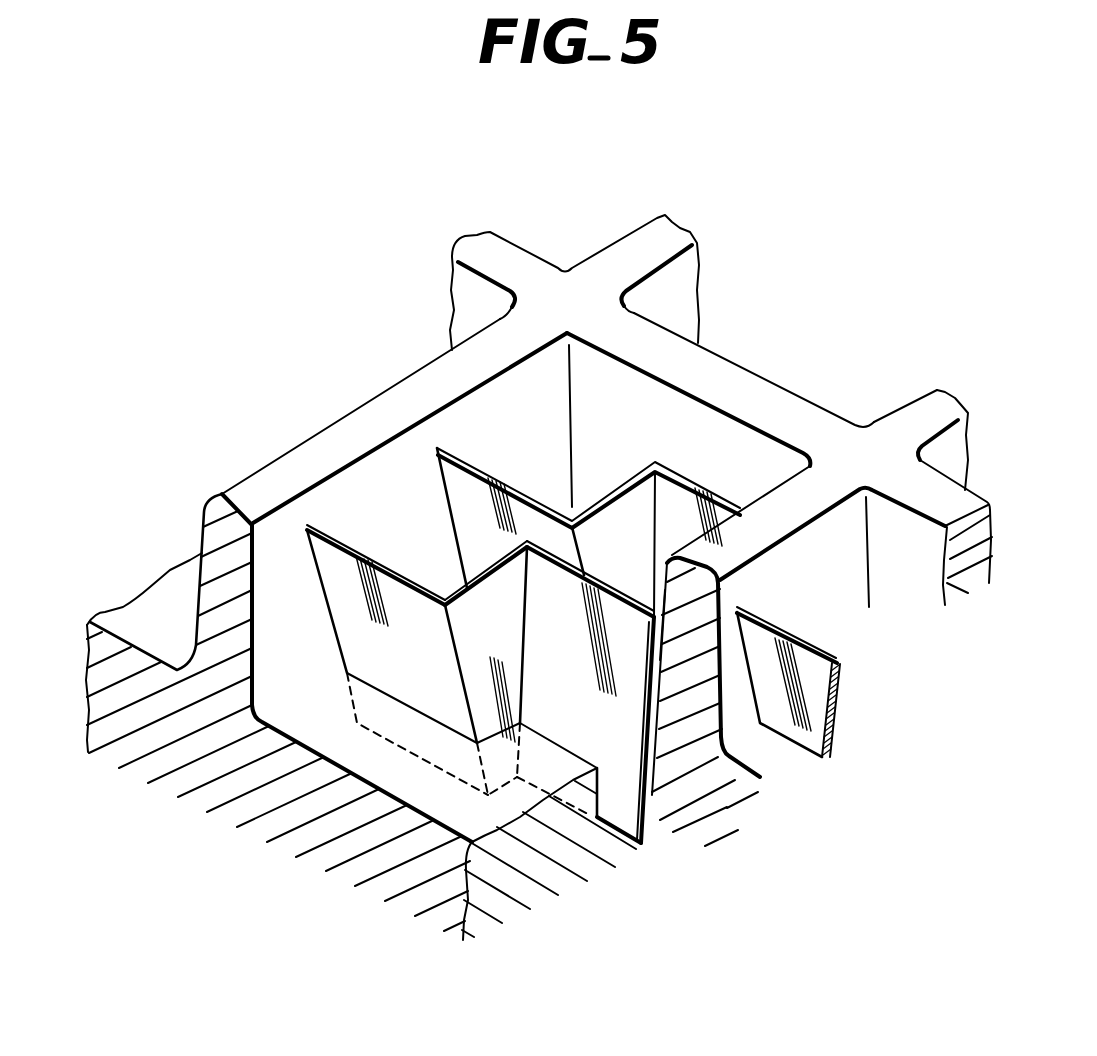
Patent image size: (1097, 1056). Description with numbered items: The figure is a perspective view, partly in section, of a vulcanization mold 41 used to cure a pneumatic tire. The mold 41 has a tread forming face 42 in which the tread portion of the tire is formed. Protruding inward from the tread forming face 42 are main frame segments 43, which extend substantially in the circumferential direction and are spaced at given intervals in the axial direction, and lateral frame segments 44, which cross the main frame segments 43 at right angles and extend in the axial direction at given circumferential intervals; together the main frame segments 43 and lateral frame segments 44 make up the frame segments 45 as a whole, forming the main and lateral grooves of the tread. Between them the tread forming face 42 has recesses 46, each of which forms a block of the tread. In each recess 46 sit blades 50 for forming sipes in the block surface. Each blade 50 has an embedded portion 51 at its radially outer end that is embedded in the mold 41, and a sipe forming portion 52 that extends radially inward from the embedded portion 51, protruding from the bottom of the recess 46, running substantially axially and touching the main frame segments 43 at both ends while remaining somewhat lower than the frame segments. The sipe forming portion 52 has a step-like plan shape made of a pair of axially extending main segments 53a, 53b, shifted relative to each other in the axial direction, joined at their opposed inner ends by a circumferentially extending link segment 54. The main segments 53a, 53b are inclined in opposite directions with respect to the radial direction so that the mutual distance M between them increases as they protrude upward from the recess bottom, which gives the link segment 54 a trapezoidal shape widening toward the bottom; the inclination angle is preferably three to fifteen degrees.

The vulcanization mold 41 is at (727, 263).
The tread forming face 42 is at (158, 613).
The main frame segment 43 is at (400, 388).
The lateral frame segment 44 is at (768, 395).
The frame segment 45 is at (898, 407).
The recess 46 is at (582, 439).
The blade 50 is at (711, 481).
The embedded portion 51 is at (623, 792).
The sipe forming portion 52 is at (659, 744).
The main segment 53a is at (347, 605).
The main segment 53b is at (612, 600).
The link segment 54 is at (503, 672).
The mutual distance M is at (505, 512).